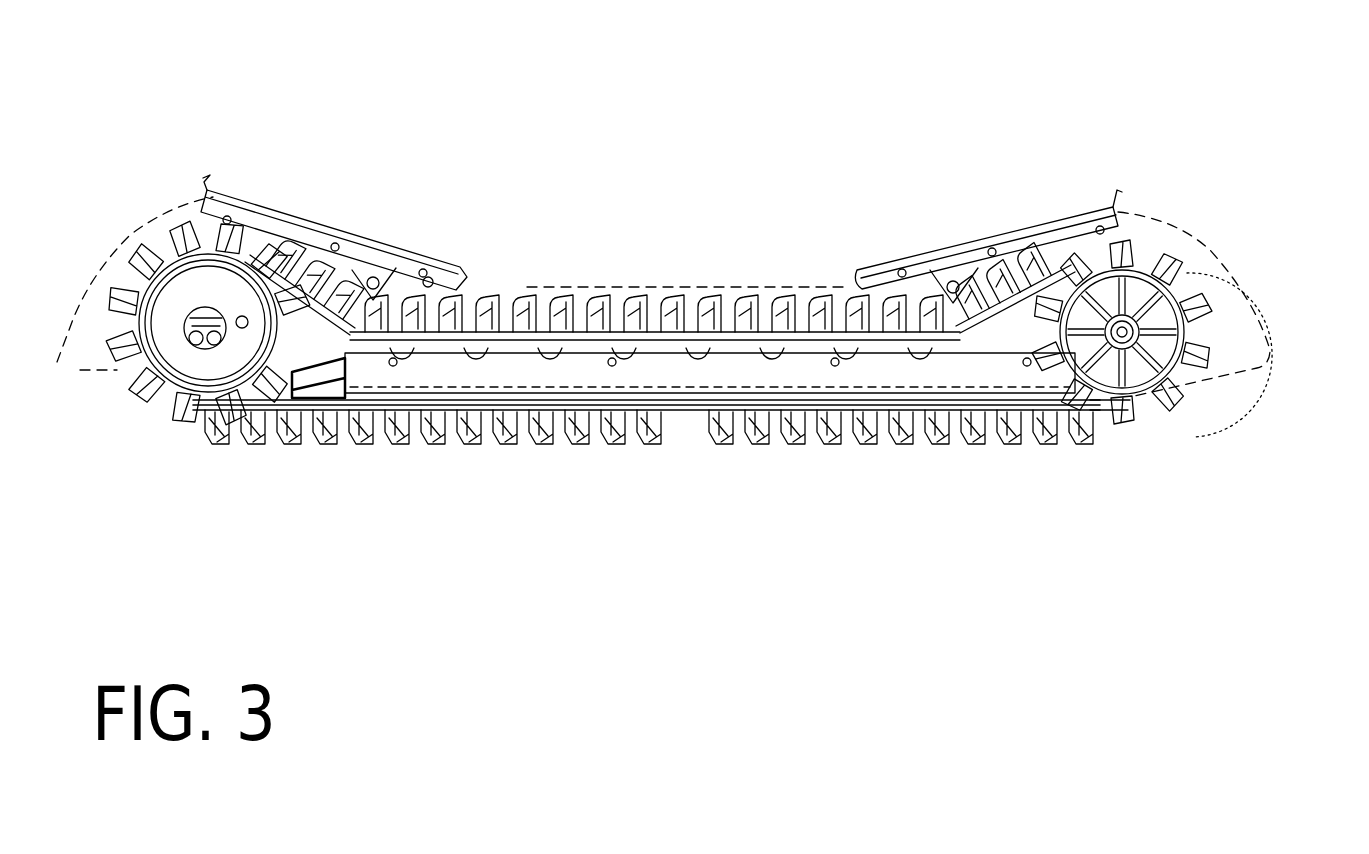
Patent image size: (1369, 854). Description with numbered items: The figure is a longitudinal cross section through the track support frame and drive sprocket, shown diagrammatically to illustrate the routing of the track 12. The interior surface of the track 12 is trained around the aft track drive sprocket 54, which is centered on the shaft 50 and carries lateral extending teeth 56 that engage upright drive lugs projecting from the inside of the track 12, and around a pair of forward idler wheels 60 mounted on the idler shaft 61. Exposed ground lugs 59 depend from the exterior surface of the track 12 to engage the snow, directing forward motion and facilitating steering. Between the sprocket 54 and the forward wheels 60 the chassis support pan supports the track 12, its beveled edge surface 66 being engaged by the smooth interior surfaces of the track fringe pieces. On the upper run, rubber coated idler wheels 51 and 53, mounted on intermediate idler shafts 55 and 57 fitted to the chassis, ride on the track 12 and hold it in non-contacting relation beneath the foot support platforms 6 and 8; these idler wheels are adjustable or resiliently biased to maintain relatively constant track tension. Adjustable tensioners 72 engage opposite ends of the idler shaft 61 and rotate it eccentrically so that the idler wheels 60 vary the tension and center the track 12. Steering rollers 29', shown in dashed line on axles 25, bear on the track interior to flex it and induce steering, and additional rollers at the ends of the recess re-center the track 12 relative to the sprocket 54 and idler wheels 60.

The foot support platform 6 is at (352, 230).
The foot support platform 8 is at (977, 233).
The track 12 is at (830, 455).
The axle 25 is at (602, 448).
The steering roller 29' is at (743, 510).
The shaft 50 is at (1187, 273).
The idler wheel 51 is at (428, 282).
The idler wheel 53 is at (890, 283).
The track drive sprocket 54 is at (1250, 372).
The intermediate idler shaft 55 is at (373, 283).
The lateral extending teeth 56 is at (1140, 253).
The intermediate idler shaft 57 is at (953, 287).
The ground lug 59 is at (505, 455).
The forward idler wheel 60 is at (250, 430).
The idler shaft 61 is at (190, 317).
The beveled edge surface 66 is at (380, 420).
The adjustable tensioner 72 is at (190, 337).